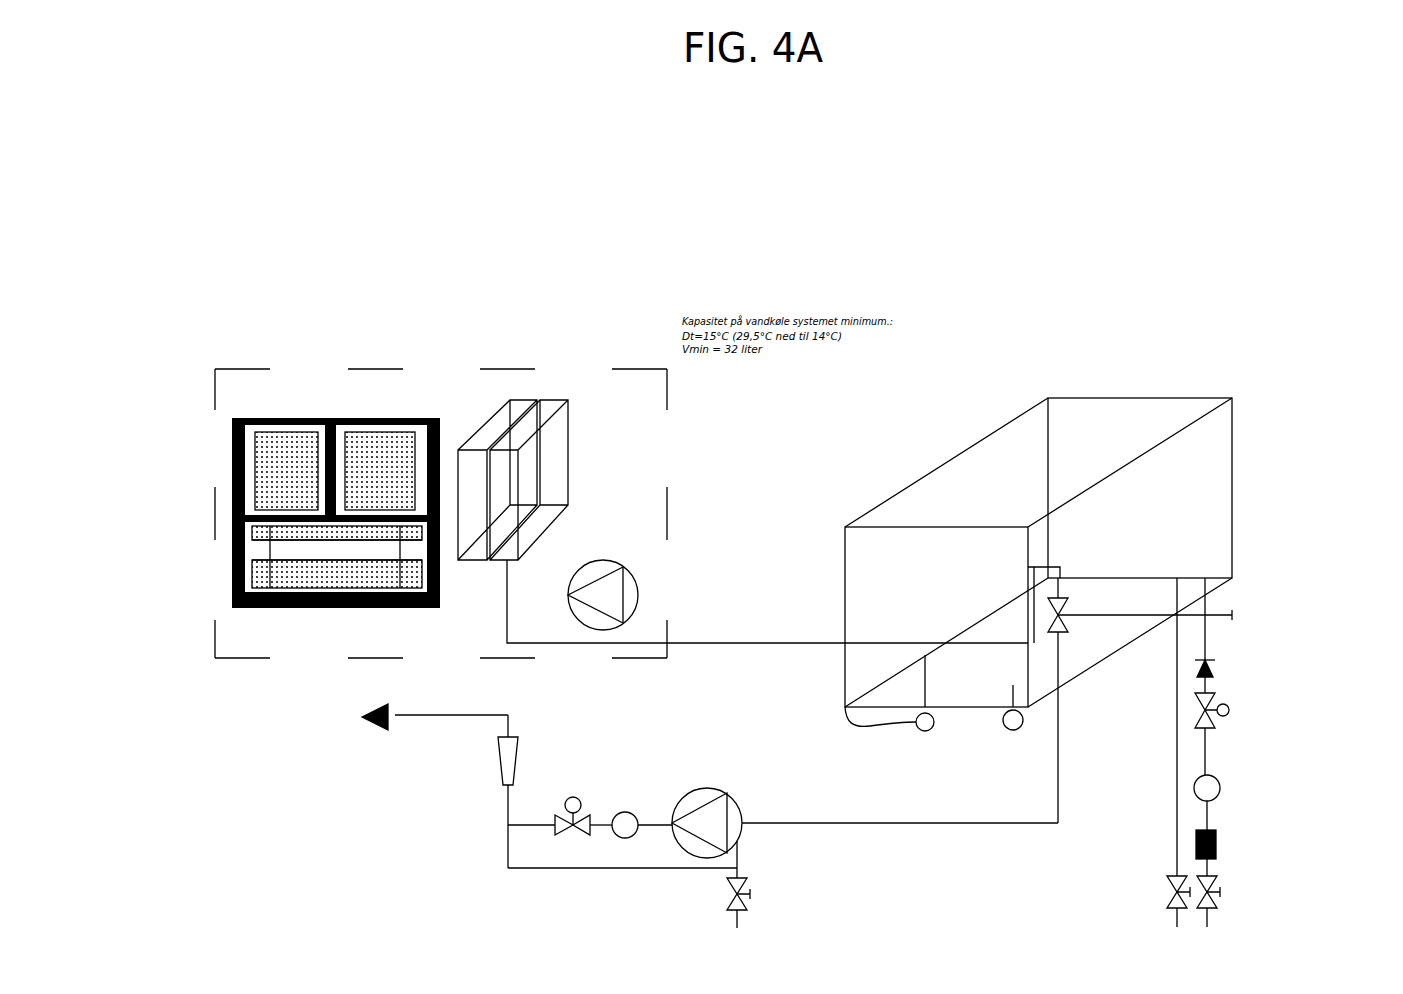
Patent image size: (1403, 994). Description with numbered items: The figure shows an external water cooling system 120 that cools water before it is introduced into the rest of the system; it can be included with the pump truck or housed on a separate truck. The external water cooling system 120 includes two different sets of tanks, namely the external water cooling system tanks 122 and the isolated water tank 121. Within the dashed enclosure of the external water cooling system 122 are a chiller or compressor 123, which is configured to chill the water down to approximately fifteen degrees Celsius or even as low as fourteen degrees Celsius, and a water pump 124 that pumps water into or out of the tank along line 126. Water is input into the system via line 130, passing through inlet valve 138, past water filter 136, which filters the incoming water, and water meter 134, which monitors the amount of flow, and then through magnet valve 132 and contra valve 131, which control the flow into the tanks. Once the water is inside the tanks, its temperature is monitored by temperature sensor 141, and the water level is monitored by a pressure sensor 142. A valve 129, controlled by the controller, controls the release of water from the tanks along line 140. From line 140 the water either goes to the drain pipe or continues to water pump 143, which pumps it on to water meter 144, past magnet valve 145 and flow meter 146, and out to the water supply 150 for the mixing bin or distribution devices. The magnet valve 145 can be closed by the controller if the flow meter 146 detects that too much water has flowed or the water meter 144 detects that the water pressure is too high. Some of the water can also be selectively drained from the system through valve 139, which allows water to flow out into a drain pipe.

The external water cooling system 120 is at (656, 256).
The isolated water tank 121 is at (1077, 384).
The external water cooling system tanks 122 is at (416, 300).
The chiller or compressor 123 is at (268, 606).
The water pump 124 is at (665, 512).
The line 126 is at (709, 622).
The valve 129 is at (1072, 603).
The line 130 is at (1208, 642).
The contra valve 131 is at (1212, 666).
The magnet valve 132 is at (1210, 730).
The water meter 134 is at (1196, 792).
The water filter 136 is at (1168, 876).
The valve 138 is at (1220, 890).
The valve 139 is at (1170, 902).
The line 140 is at (1062, 730).
The temperature sensor 141 is at (845, 707).
The pressure sensor 142 is at (1006, 727).
The water pump 143 is at (700, 790).
The water meter 144 is at (625, 840).
The magnet valve 145 is at (555, 835).
The flow meter 146 is at (516, 737).
The water supply 150 is at (286, 758).